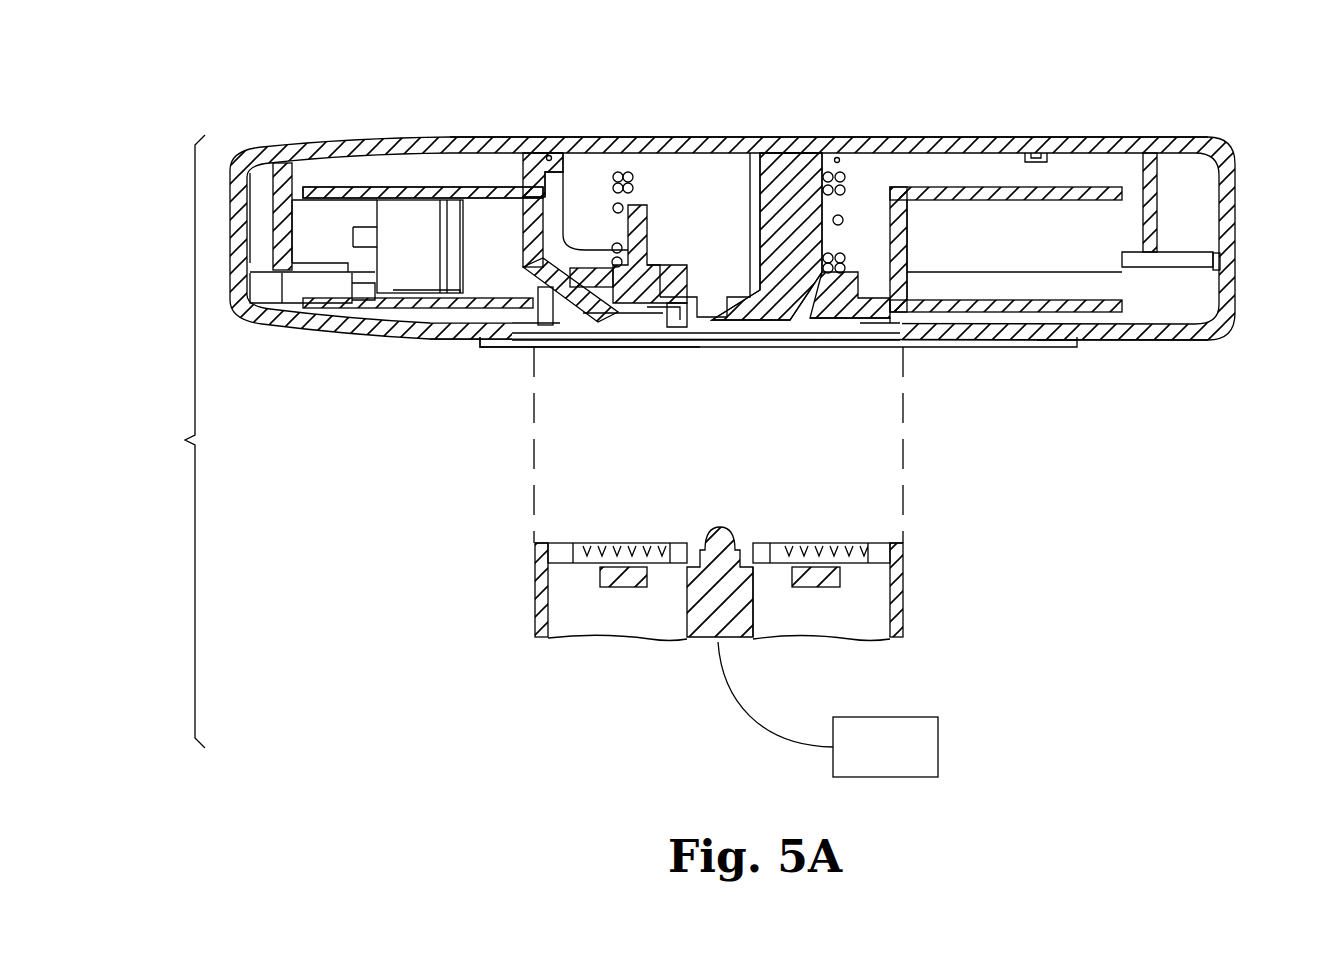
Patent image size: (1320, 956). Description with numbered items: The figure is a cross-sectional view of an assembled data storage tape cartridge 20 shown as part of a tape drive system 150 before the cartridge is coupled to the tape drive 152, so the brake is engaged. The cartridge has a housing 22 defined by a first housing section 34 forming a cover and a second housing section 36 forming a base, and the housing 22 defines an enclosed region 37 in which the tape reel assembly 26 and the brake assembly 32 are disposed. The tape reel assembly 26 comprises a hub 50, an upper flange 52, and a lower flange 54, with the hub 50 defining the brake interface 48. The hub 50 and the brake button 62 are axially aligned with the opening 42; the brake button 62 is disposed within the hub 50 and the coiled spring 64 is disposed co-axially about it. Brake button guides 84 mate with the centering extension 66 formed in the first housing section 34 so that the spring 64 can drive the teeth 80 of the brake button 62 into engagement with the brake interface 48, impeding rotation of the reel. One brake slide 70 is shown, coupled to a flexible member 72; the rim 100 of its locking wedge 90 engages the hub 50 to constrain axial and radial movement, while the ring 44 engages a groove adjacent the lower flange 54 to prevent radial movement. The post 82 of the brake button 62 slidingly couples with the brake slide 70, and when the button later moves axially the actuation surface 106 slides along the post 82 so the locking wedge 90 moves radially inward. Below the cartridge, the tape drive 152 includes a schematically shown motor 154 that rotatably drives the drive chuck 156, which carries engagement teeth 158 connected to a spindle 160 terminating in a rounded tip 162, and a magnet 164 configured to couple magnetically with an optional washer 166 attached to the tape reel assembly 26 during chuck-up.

The data storage tape cartridge 20 is at (1188, 104).
The housing 22 is at (1243, 236).
The tape reel assembly 26 is at (494, 185).
The brake assembly 32 is at (865, 224).
The first housing section 34 is at (1098, 140).
The second housing section 36 is at (1238, 325).
The enclosed region 37 is at (1199, 196).
The opening 42 is at (552, 330).
The ring 44 is at (513, 320).
The brake interface 48 is at (856, 330).
The hub 50 is at (553, 192).
The upper flange 52 is at (340, 188).
The lower flange 54 is at (342, 308).
The brake button 62 is at (622, 232).
The coiled spring 64 is at (850, 180).
The centering extension 66 is at (785, 210).
The brake slide 70 is at (628, 162).
The flexible member 72 is at (838, 152).
The teeth 80 is at (850, 300).
The post 82 is at (662, 212).
The brake button guide 84 is at (800, 235).
The locking wedge 90 is at (543, 155).
The rim 100 is at (530, 200).
The actuation surface 106 is at (650, 222).
The tape drive system 150 is at (171, 441).
The tape drive 152 is at (731, 629).
The motor 154 is at (899, 717).
The drive chuck 156 is at (527, 631).
The engagement teeth 158 is at (612, 553).
The spindle 160 is at (760, 610).
The rounded tip 162 is at (718, 532).
The magnet 164 is at (618, 588).
The washer 166 is at (605, 335).